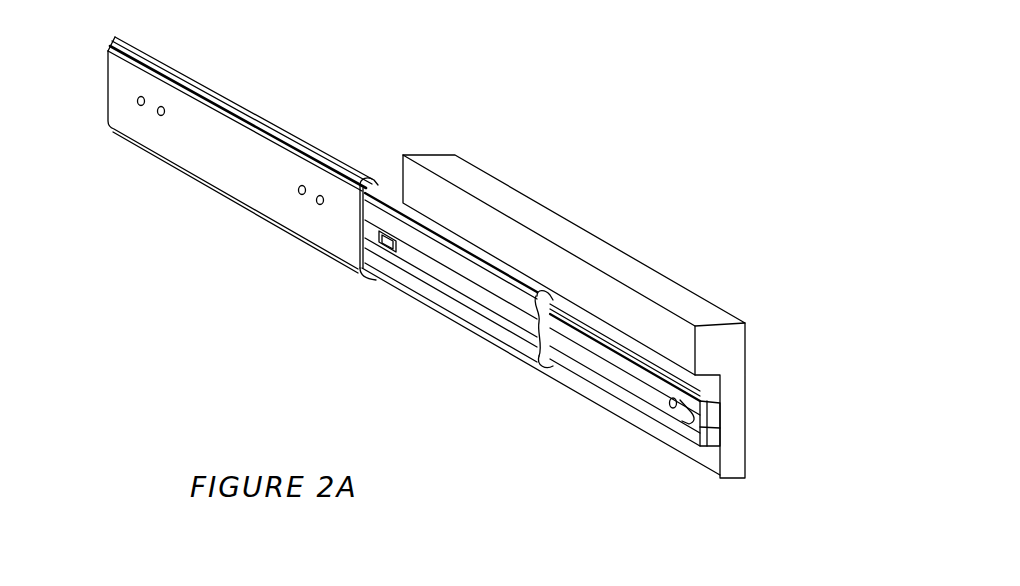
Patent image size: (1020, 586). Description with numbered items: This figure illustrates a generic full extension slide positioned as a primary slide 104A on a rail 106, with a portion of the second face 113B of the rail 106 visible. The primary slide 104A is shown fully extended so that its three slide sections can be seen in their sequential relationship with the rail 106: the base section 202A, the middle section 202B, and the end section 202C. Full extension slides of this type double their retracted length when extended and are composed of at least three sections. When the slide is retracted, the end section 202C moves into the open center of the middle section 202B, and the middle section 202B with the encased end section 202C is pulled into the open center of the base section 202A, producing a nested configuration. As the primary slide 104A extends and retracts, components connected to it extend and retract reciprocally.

The primary slide 104A is at (258, 94).
The left rail 106 is at (597, 229).
The base section 202A is at (215, 173).
The middle section 202B is at (446, 302).
The end section 202C is at (620, 398).
The second face 113B is at (683, 446).